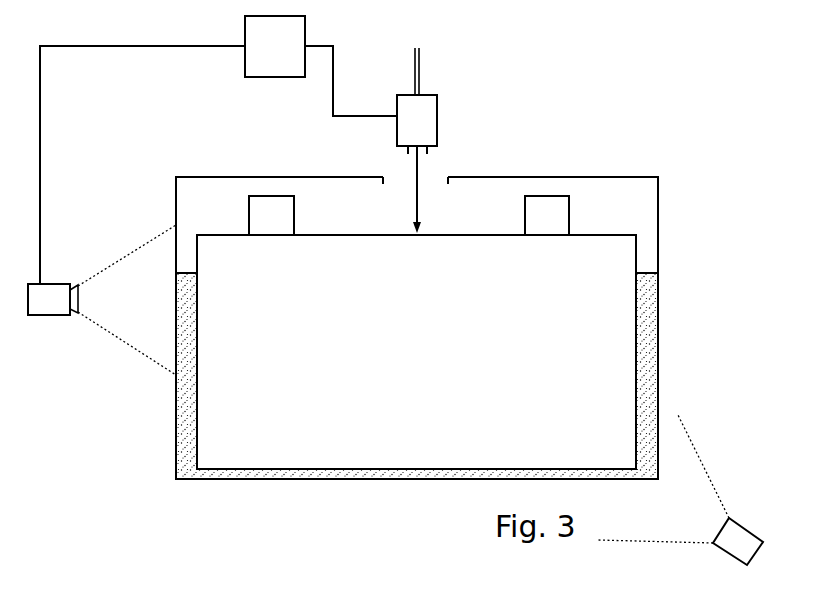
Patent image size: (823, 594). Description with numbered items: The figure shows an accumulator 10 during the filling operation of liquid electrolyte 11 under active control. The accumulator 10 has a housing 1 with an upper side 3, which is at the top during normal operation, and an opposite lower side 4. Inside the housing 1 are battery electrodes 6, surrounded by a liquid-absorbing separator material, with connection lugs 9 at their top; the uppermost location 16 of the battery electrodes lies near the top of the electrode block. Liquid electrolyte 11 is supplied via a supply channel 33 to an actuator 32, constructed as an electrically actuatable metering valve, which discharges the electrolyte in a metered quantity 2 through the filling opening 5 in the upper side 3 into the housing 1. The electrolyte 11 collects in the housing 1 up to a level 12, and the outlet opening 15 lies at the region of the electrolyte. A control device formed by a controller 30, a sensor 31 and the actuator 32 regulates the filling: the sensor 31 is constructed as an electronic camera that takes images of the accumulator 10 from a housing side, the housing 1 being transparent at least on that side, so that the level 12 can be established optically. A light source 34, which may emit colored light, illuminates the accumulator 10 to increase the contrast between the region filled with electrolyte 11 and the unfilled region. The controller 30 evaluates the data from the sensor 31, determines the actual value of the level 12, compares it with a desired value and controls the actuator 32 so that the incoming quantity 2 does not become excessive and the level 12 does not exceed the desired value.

The housing 1 is at (176, 375).
The quantity of incoming electrolyte 2 is at (417, 173).
The upper side 3 is at (228, 177).
The lower side 4 is at (253, 480).
The filling opening 5 is at (445, 170).
The battery electrodes 6 is at (333, 450).
The connection lugs 9 is at (273, 207).
The accumulator 10 is at (130, 422).
The liquid electrolyte 11 is at (648, 304).
The level 12 is at (648, 272).
The outlet opening 15 is at (182, 282).
The uppermost location of the battery electrodes 16 is at (588, 235).
The controller 30 is at (245, 25).
The sensor 31 is at (48, 283).
The actuator 32 is at (438, 115).
The supply channel 33 is at (419, 56).
The light source 34 is at (746, 524).